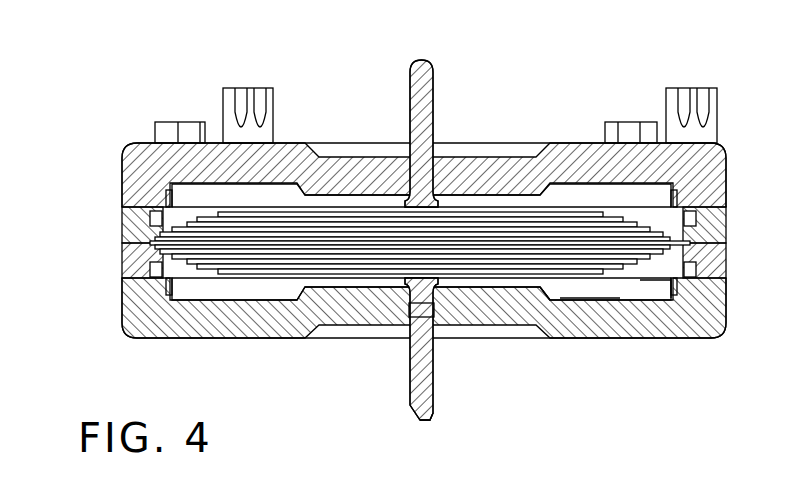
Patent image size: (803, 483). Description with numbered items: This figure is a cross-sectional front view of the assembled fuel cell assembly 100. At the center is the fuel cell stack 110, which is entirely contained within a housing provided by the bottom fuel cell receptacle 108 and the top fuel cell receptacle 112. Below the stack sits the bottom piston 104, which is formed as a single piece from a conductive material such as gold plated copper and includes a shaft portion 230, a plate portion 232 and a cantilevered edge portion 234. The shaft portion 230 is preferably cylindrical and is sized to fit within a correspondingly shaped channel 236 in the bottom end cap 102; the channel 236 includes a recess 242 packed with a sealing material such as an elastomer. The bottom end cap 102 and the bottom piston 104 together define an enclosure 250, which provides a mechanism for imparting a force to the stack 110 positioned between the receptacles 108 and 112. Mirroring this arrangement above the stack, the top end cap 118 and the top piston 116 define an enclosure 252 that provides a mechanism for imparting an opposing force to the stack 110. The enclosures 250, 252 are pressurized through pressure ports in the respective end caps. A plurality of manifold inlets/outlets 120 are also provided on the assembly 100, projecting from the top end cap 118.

The fuel cell assembly 100 is at (483, 72).
The bottom end cap 102 is at (121, 318).
The bottom piston 104 is at (410, 358).
The bottom fuel cell receptacle 108 is at (121, 251).
The fuel cell stack 110 is at (374, 238).
The top fuel cell receptacle 112 is at (121, 211).
The top piston 116 is at (408, 90).
The top end cap 118 is at (121, 171).
The manifold inlets/outlets 120 is at (223, 99).
The shaft portion 230 is at (433, 410).
The plate portion 232 is at (587, 288).
The cantilevered edge portion 234 is at (667, 288).
The channel 236 is at (425, 324).
The recess 242 is at (434, 318).
The enclosure 250 is at (222, 288).
The enclosure 252 is at (228, 202).